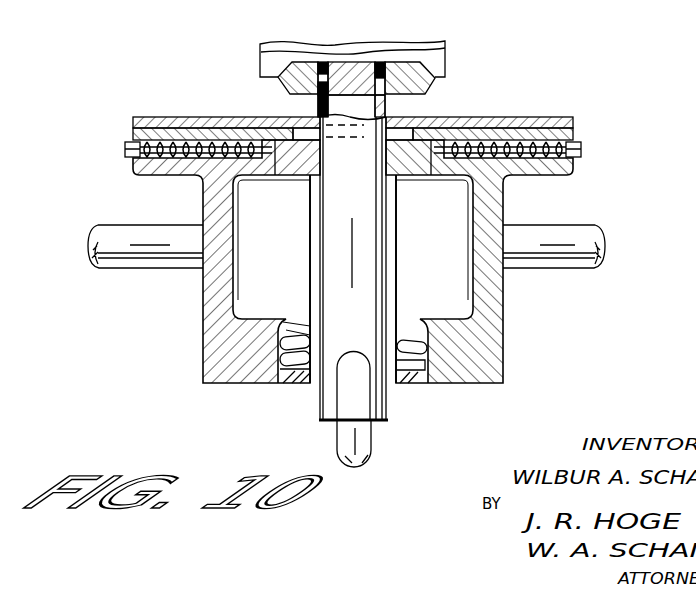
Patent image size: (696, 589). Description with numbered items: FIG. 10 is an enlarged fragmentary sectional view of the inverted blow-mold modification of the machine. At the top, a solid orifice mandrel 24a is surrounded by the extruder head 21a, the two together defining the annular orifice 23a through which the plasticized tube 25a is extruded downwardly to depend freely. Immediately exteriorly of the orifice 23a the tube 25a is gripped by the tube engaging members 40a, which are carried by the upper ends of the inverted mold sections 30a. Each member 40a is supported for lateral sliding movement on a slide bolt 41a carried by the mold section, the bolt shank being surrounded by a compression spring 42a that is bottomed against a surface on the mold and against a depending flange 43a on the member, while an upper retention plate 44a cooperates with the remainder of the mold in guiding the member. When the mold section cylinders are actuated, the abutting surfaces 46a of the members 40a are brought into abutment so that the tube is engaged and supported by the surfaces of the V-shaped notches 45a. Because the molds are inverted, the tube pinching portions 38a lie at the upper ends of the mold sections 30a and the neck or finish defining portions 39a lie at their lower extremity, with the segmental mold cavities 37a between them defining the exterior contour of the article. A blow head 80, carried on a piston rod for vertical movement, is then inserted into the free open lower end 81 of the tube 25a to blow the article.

The extruder head 21a is at (446, 50).
The orifice 23a is at (318, 98).
The orifice mandrel 24a is at (352, 72).
The tube 25a is at (402, 286).
The mold section 30a is at (520, 311).
The mold cavity 37a is at (246, 298).
The pinching surfaces 38a is at (400, 168).
The neck defining portions 39a is at (415, 330).
The tube engaging member 40a is at (346, 137).
The slide bolt 41a is at (127, 150).
The compression spring 42a is at (158, 136).
The depending flange 43a is at (261, 160).
The retention plate 44a is at (181, 123).
The V-shaped notch 45a is at (300, 130).
The abutting surfaces 46a is at (348, 128).
The blow head 80 is at (352, 452).
The open lower end 81 is at (389, 421).